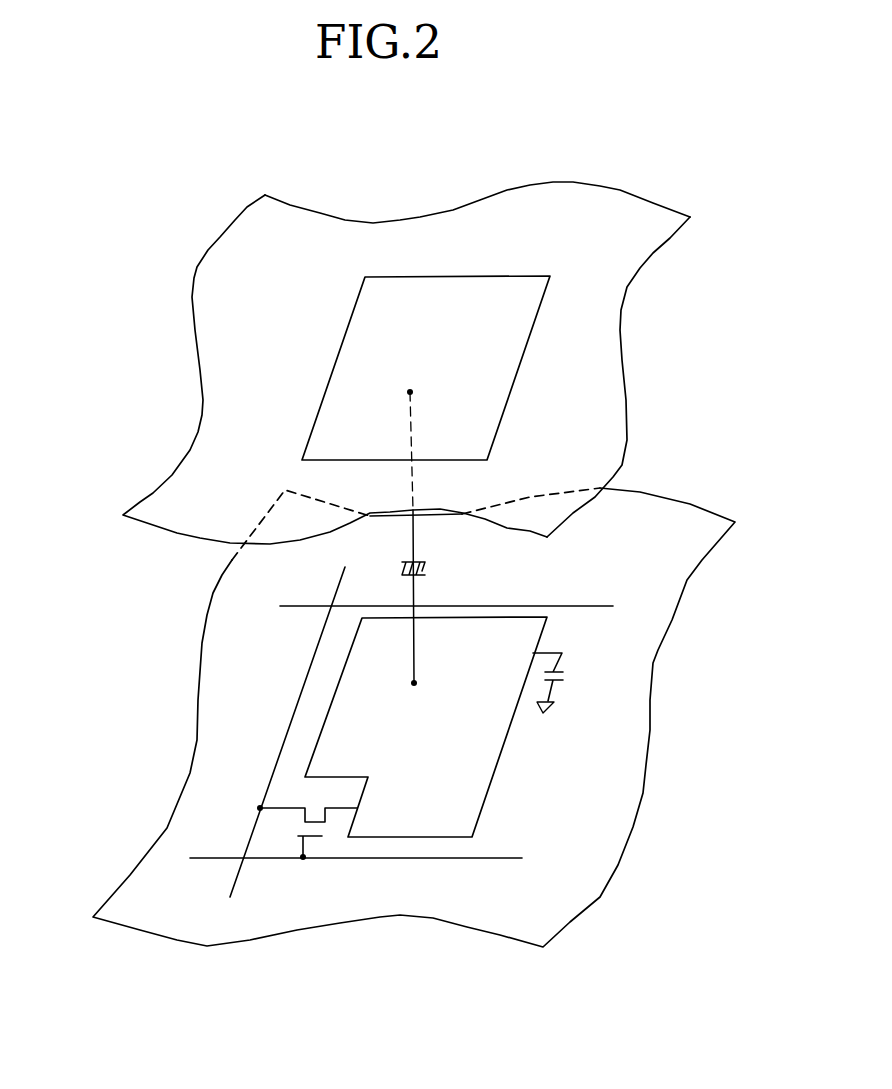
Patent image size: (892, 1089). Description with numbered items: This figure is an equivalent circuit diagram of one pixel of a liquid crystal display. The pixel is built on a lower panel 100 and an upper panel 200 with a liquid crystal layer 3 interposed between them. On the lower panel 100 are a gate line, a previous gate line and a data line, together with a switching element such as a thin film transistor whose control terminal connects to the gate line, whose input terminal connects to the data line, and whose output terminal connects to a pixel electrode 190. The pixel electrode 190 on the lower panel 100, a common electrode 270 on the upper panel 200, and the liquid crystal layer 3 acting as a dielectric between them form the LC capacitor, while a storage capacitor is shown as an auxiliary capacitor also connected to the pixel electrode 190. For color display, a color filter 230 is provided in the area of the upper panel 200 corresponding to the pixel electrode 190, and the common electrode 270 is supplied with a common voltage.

The liquid crystal layer 3 is at (112, 620).
The lower panel 100 is at (668, 693).
The pixel electrode 190 is at (493, 773).
The upper panel 200 is at (646, 388).
The color filter 230 is at (519, 384).
The common electrode 270 is at (620, 330).